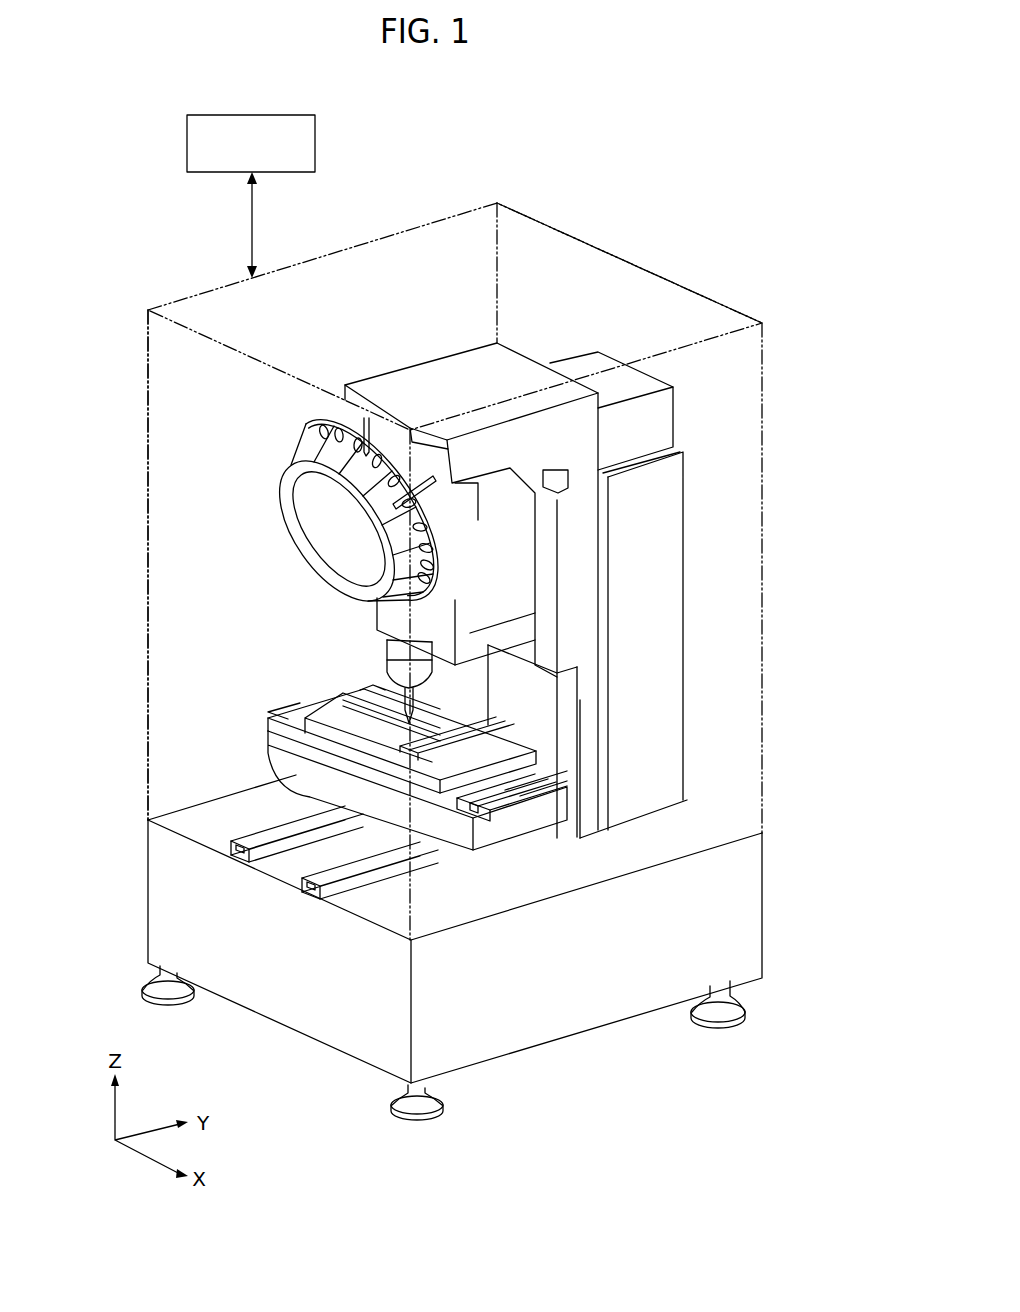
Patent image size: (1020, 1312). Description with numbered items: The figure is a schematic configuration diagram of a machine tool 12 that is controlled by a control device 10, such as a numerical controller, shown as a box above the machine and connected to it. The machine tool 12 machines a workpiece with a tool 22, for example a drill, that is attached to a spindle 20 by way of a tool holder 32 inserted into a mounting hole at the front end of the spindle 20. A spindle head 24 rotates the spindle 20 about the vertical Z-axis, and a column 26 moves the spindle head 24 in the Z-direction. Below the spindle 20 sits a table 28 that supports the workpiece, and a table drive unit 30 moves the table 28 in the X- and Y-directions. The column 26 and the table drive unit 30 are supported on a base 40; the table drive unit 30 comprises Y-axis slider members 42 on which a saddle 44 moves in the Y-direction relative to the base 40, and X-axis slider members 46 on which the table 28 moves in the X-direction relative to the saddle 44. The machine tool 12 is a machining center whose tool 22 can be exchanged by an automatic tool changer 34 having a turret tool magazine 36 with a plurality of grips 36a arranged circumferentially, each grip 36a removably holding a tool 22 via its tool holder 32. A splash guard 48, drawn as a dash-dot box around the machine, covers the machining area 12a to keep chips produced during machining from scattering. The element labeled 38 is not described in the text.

The control device 10 is at (235, 114).
The machine tool 12 is at (624, 243).
The machining area 12a is at (180, 463).
The spindle 20 is at (395, 670).
The tool 22 is at (375, 722).
The spindle head 24 is at (385, 613).
The column 26 is at (580, 582).
The table 28 is at (535, 762).
The table drive unit 30 is at (254, 733).
The tool holder 32 is at (418, 688).
The automatic tool changer 34 is at (367, 519).
The tool magazine 36 is at (315, 510).
The grips 36a is at (398, 478).
The T-slot 38 is at (447, 740).
The base 40 is at (238, 985).
The Y-axis slider members 42 is at (307, 887).
The saddle 44 is at (286, 752).
The X-axis slider members 46 is at (552, 807).
The splash guard 48 is at (548, 220).